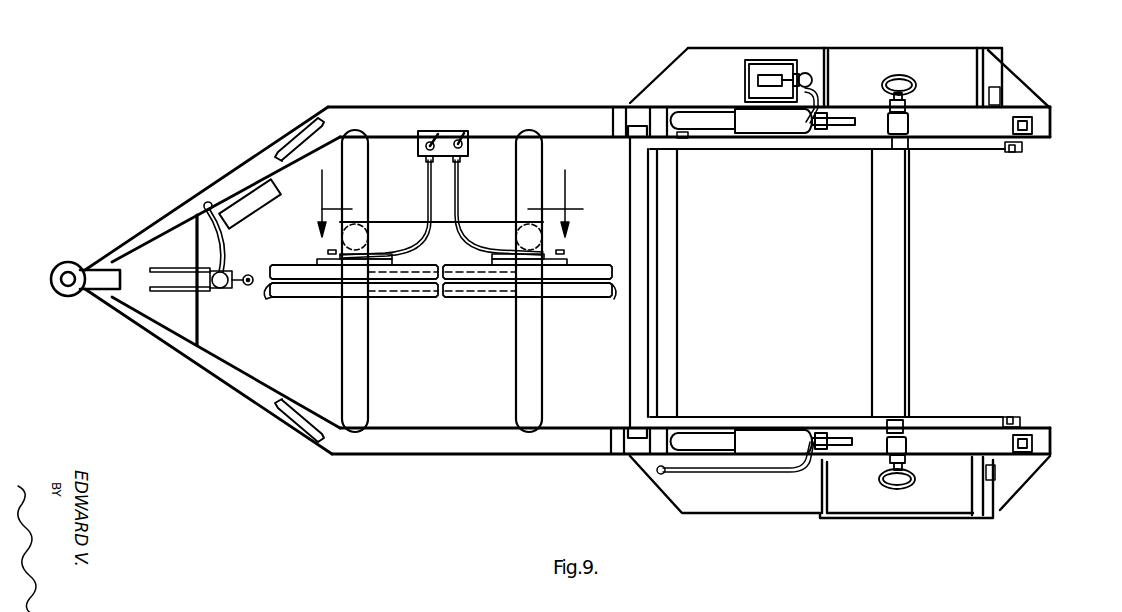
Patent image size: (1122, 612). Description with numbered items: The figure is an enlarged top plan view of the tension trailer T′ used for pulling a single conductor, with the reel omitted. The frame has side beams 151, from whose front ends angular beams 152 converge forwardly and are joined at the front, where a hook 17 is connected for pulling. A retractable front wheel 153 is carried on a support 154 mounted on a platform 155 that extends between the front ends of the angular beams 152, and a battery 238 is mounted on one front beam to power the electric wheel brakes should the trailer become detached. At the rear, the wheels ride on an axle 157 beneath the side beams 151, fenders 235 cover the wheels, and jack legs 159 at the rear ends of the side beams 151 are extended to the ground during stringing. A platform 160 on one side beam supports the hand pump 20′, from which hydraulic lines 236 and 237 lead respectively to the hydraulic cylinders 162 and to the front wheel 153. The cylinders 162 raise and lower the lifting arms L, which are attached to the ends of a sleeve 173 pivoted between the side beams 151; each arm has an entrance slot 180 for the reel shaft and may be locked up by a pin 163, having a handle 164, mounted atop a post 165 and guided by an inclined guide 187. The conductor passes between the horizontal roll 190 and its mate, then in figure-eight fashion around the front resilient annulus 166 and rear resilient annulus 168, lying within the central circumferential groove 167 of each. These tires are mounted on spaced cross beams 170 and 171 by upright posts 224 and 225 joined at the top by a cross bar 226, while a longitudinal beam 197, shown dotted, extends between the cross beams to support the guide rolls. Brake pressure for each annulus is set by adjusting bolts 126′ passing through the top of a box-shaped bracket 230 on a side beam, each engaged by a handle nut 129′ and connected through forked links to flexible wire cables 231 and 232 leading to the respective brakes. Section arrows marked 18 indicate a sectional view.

The hook 17 is at (57, 291).
The tension trailer T′ is at (318, 452).
The angular beams 152 is at (223, 185).
The support 154 is at (158, 269).
The retractable front wheel 153 is at (243, 277).
The hydraulic line 237 is at (222, 254).
The battery 238 is at (250, 213).
The platform 155 is at (191, 313).
The central circumferential groove 167 is at (265, 292).
The front resilient annulus 166 is at (297, 294).
The rear resilient annulus 168 is at (503, 296).
The longitudinal beam 197 is at (400, 295).
The cross beam 170 is at (358, 334).
The cross beam 171 is at (532, 376).
The cross bar 226 is at (388, 226).
The upright post 224 is at (340, 253).
The upright post 225 is at (545, 245).
The flexible wire cable 231 is at (419, 234).
The flexible wire cable 232 is at (462, 216).
The box-shaped bracket 230 is at (469, 146).
The adjusting bolts 126′ is at (432, 140).
The handle nut 129′ is at (426, 159).
The section line 18 is at (446, 203).
The side beams 151 is at (440, 108).
The lifting arms L is at (997, 160).
The horizontal roll 190 is at (633, 397).
The sleeve 173 is at (675, 284).
The axle 157 is at (886, 279).
The platform 160 is at (722, 53).
The fenders 235 is at (853, 53).
The hand pump 20′ is at (778, 68).
The hydraulic lines 236 is at (821, 104).
The hydraulic cylinders 162 is at (775, 128).
The handles 164 is at (903, 75).
The pins 163 is at (906, 102).
The posts 165 is at (910, 125).
The inclined guide 187 is at (904, 151).
The jack legs 159 is at (1035, 125).
The entrance slot 180 is at (1015, 152).